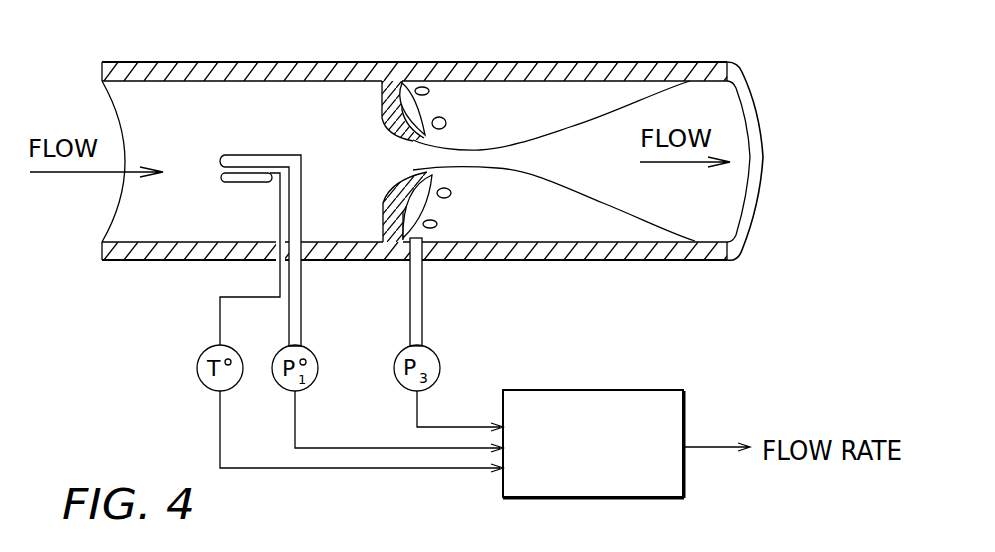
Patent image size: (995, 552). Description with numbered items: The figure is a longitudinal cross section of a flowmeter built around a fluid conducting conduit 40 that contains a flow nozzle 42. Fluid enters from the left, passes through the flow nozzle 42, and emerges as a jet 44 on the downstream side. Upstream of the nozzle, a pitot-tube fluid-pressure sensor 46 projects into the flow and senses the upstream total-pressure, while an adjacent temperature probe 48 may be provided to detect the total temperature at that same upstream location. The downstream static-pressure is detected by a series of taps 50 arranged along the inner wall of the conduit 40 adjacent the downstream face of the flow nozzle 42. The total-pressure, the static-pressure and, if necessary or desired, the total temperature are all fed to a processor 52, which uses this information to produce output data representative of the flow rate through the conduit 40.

The conduit 40 is at (272, 62).
The flow nozzle 42 is at (425, 118).
The jet 44 is at (498, 168).
The pitot-tube fluid-pressure sensor 46 is at (267, 152).
The temperature probe 48 is at (238, 180).
The taps 50 is at (450, 122).
The processor 52 is at (568, 389).